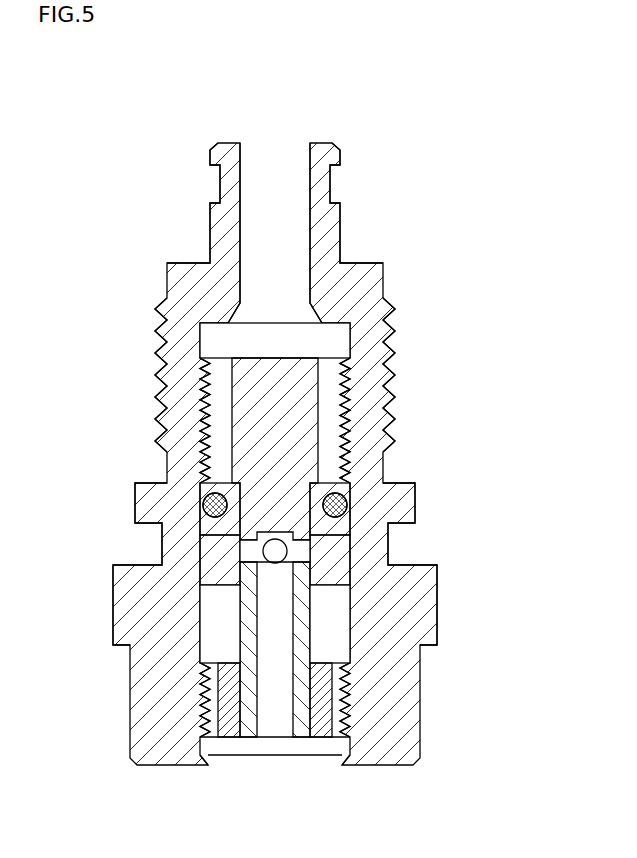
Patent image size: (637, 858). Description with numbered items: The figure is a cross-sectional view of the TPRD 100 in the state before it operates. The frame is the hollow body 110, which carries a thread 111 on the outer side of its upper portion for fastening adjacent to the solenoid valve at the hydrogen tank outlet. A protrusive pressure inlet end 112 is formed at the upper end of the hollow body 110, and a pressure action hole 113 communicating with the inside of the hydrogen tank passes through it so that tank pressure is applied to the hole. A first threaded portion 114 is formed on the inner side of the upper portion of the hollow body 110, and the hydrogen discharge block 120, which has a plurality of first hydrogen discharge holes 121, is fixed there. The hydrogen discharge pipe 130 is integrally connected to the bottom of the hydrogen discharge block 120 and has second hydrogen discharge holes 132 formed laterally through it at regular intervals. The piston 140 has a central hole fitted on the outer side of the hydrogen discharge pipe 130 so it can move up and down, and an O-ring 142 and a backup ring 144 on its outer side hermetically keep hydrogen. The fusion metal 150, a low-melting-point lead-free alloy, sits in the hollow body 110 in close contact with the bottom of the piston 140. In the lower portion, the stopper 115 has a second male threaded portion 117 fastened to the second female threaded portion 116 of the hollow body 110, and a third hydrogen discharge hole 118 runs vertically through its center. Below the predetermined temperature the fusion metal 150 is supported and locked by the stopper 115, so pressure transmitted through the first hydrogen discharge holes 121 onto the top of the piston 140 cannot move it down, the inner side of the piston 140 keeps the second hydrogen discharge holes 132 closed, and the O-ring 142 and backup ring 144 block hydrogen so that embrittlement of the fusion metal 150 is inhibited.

The TPRD 100 is at (271, 455).
The hollow body 110 is at (382, 264).
The thread 111 is at (162, 330).
The pressure inlet end 112 is at (227, 185).
The pressure action hole 113 is at (275, 160).
The first threaded portion 114 is at (352, 389).
The stopper 115 is at (325, 735).
The second female threaded portion 116 is at (212, 697).
The second male threaded portion 117 is at (208, 750).
The third hydrogen discharge hole 118 is at (250, 723).
The hydrogen discharge block 120 is at (280, 431).
The first hydrogen discharge holes 121 is at (223, 418).
The hydrogen discharge pipe 130 is at (343, 631).
The second hydrogen discharge holes 132 is at (297, 551).
The piston 140 is at (217, 555).
The O-ring 142 is at (200, 500).
The backup ring 144 is at (353, 515).
The fusion metal 150 is at (338, 622).